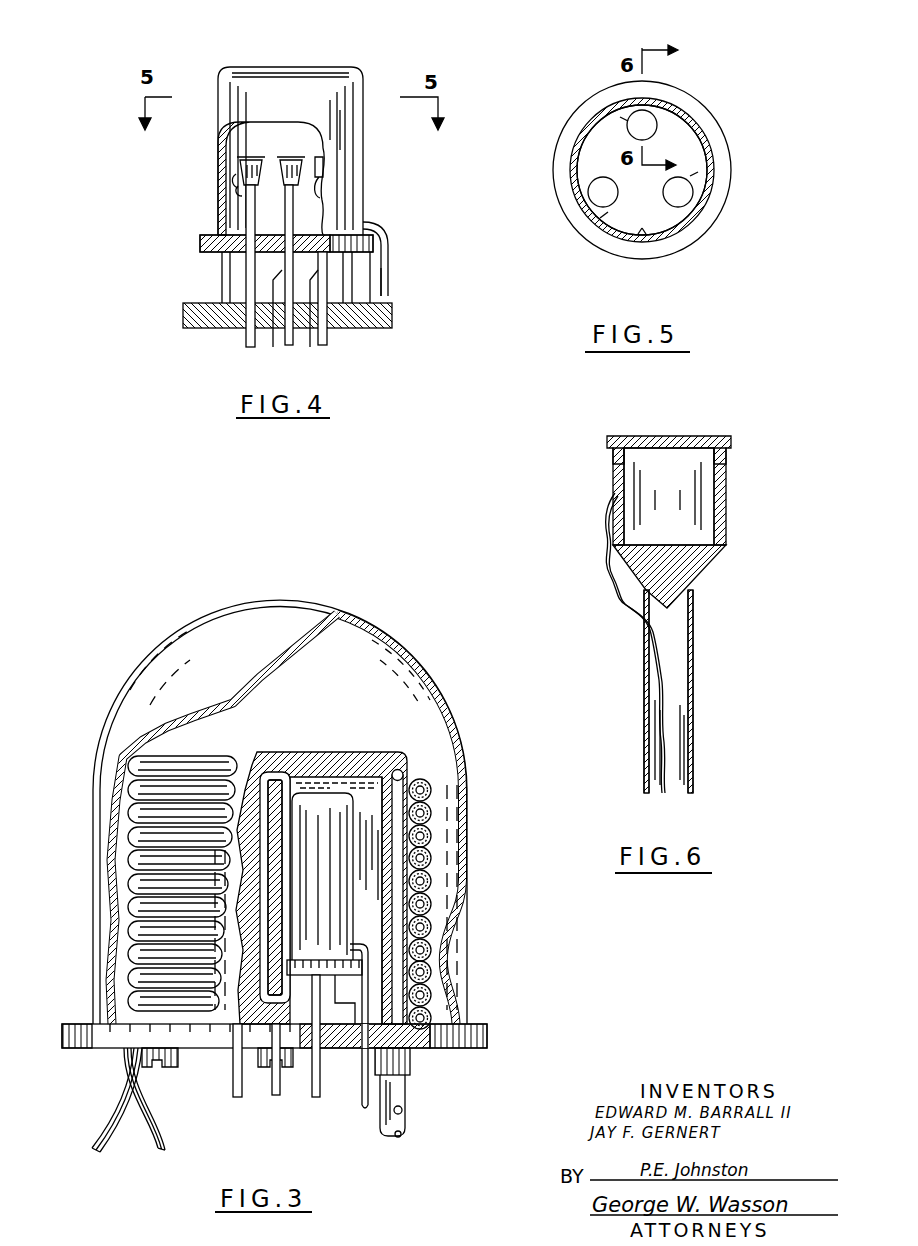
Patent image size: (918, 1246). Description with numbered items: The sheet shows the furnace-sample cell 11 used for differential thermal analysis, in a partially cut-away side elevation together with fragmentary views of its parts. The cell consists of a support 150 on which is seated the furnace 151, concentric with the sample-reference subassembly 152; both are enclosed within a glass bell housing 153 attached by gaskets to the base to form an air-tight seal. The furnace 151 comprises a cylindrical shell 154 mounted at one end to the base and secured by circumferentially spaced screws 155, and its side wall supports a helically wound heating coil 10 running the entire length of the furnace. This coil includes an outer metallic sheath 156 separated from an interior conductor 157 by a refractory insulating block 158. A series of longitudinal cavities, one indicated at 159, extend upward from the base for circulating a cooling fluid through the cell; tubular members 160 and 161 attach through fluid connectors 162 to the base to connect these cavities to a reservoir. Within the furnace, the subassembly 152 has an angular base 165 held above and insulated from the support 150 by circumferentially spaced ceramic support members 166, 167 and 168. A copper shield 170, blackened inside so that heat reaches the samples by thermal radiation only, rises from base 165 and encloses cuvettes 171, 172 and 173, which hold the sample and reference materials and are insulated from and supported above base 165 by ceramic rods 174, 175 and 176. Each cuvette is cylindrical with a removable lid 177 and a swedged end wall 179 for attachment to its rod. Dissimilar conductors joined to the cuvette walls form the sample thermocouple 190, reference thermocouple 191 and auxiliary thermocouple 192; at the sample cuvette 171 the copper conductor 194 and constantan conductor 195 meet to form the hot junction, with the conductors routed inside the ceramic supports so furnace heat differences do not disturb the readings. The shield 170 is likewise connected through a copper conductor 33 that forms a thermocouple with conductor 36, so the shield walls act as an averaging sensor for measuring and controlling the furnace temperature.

In FIG. 3, the heating coil 10 is at (430, 823).
In FIG. 3, the furnace-sample cell 11 is at (176, 632).
In FIG. 4, the copper conductor 33 is at (382, 277).
In FIG. 4, the conductor 36 is at (375, 297).
In FIG. 3, the support 150 is at (478, 1024).
In FIG. 3, the furnace 151 is at (318, 751).
In FIG. 4, the sample-reference subassembly 152 is at (321, 59).
In FIG. 3, the sample-reference subassembly 152 is at (358, 813).
In FIG. 3, the glass bell housing 153 is at (405, 652).
In FIG. 3, the cylindrical shell 154 is at (383, 868).
In FIG. 3, the screws 155 is at (170, 1068).
In FIG. 3, the outer metallic sheath 156 is at (128, 770).
In FIG. 3, the interior conductor 157 is at (430, 902).
In FIG. 3, the insulating block 158 is at (430, 925).
In FIG. 3, the longitudinal cavity 159 is at (397, 797).
In FIG. 3, the tubular member 160 is at (405, 1096).
In FIG. 3, the tubular member 161 is at (407, 1128).
In FIG. 3, the fluid connectors 162 is at (410, 1063).
In FIG. 4, the angular base 165 is at (210, 240).
In FIG. 5, the angular base 165 is at (560, 200).
In FIG. 4, the ceramic support member 166 is at (222, 280).
In FIG. 5, the ceramic support member 166 is at (582, 130).
In FIG. 4, the ceramic support member 167 is at (272, 348).
In FIG. 5, the ceramic support member 167 is at (642, 228).
In FIG. 4, the ceramic support member 168 is at (355, 278).
In FIG. 5, the ceramic support member 168 is at (706, 135).
In FIG. 3, the ceramic support member 168 is at (355, 1048).
In FIG. 4, the shield 170 is at (220, 156).
In FIG. 5, the shield 170 is at (577, 158).
In FIG. 4, the cuvette 171 is at (251, 162).
In FIG. 5, the cuvette 171 is at (600, 207).
In FIG. 4, the cuvette 172 is at (291, 162).
In FIG. 5, the cuvette 172 is at (662, 118).
In FIG. 6, the cuvette 172 is at (726, 506).
In FIG. 4, the cuvette 173 is at (325, 168).
In FIG. 5, the cuvette 173 is at (676, 208).
In FIG. 4, the ceramic rod 174 is at (246, 276).
In FIG. 3, the ceramic rod 174 is at (233, 1090).
In FIG. 4, the ceramic rod 175 is at (295, 210).
In FIG. 6, the ceramic rod 175 is at (695, 715).
In FIG. 3, the ceramic rod 175 is at (272, 1090).
In FIG. 4, the ceramic rod 176 is at (321, 348).
In FIG. 3, the ceramic rod 176 is at (320, 1090).
In FIG. 6, the removable lid 177 is at (688, 436).
In FIG. 6, the swedged end wall 179 is at (712, 572).
In FIG. 5, the sample thermocouple 190 is at (608, 212).
In FIG. 5, the reference thermocouple 191 is at (620, 117).
In FIG. 6, the reference thermocouple 191 is at (585, 488).
In FIG. 5, the auxiliary thermocouple 192 is at (698, 172).
In FIG. 4, the conductor 194 is at (236, 180).
In FIG. 4, the conductor 195 is at (240, 188).